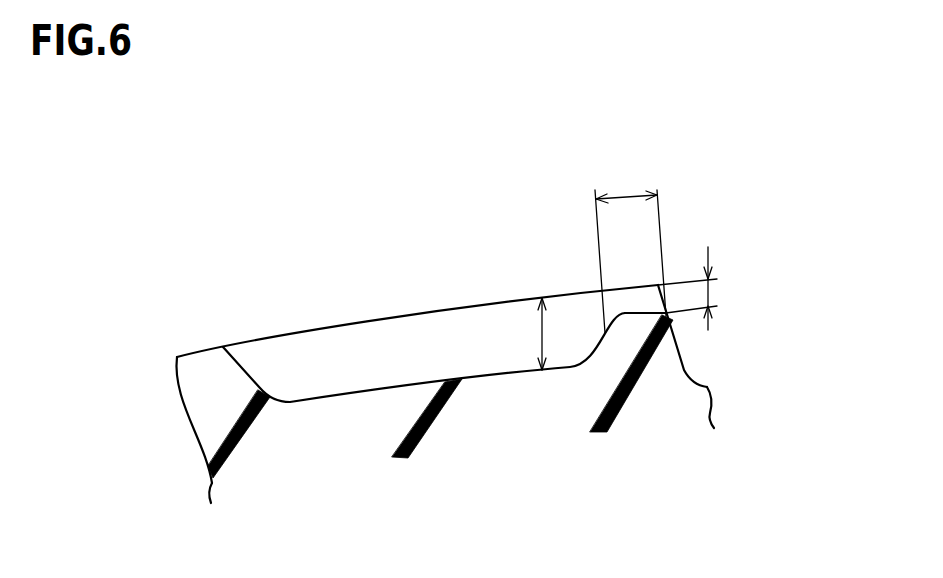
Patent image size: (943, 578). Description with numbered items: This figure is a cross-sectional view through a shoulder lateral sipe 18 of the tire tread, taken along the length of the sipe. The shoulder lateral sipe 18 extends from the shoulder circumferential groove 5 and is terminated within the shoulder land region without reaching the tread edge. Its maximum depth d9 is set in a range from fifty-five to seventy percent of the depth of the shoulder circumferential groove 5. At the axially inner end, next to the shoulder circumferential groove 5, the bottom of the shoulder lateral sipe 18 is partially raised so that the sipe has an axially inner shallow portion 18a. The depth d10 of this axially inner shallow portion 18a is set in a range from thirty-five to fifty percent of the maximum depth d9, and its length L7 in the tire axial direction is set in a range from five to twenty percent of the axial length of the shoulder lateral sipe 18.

The shoulder lateral sipe 18 is at (433, 354).
The axially inner shallow portion 18a is at (640, 313).
The shoulder circumferential groove 5 is at (700, 370).
The maximum depth of the shoulder lateral sipe d9 is at (542, 333).
The length in the tire axial direction of the axially inner shallow portion L7 is at (630, 243).
The depth of the axially inner shallow portion d10 is at (716, 288).